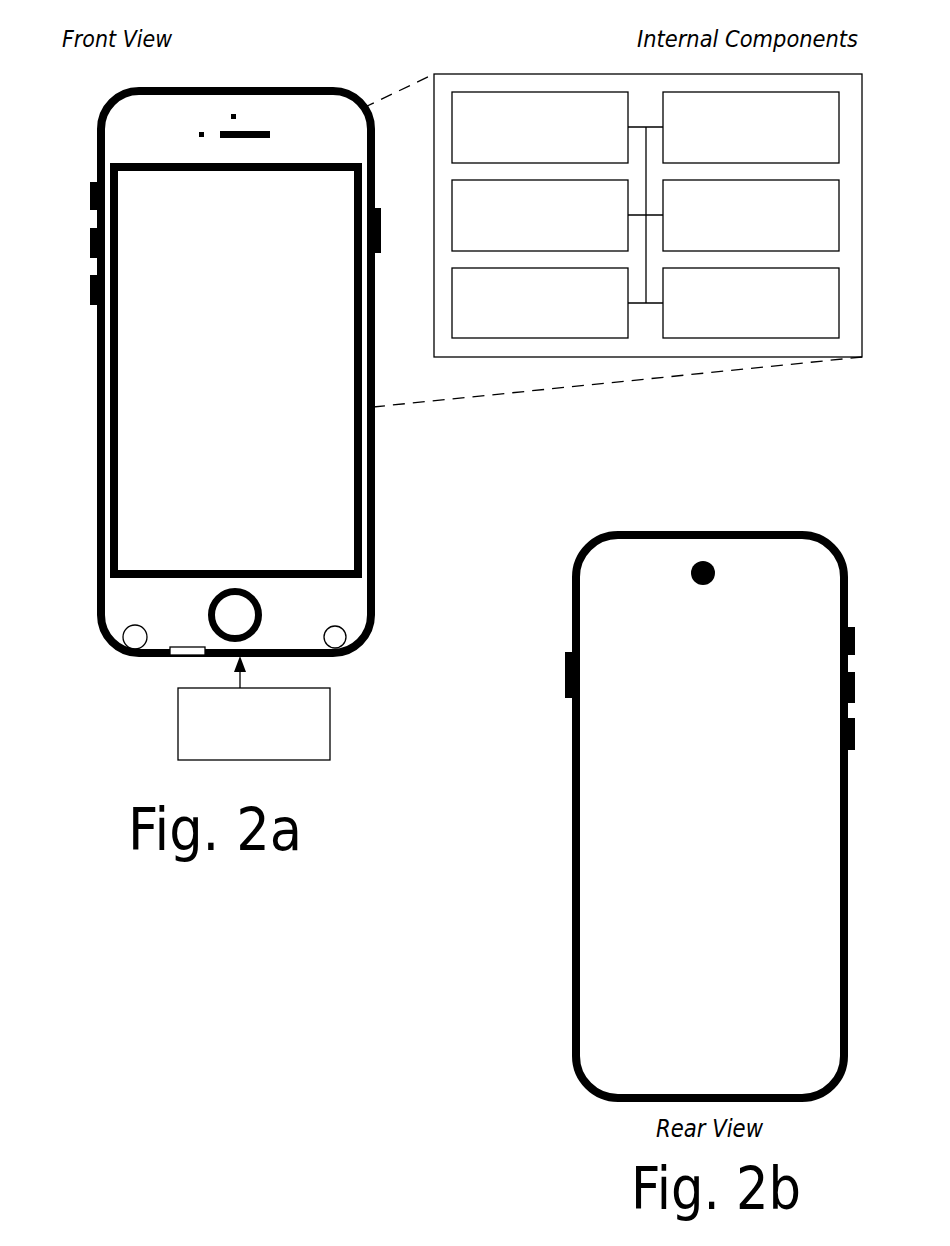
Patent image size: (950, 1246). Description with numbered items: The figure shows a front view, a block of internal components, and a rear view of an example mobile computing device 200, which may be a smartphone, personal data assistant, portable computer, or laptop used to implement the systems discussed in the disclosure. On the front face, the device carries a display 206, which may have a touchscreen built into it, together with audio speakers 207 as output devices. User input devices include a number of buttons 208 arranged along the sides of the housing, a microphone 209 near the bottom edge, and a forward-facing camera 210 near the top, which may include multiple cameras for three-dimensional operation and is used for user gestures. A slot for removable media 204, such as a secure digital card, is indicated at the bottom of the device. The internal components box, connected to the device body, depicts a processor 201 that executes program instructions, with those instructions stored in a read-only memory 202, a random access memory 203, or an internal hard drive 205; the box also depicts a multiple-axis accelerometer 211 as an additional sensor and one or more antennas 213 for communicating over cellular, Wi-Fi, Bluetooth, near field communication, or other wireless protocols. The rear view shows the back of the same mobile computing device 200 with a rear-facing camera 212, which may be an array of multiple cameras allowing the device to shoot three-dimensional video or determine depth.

In FIG. 2A, the mobile computing device 200 is at (330, 600).
In FIG. 2B, the mobile computing device 200 is at (572, 818).
In FIG. 2A, the processor 201 is at (540, 303).
In FIG. 2A, the read-only memory (ROM) 202 is at (751, 303).
In FIG. 2A, the random access memory (RAM) 203 is at (540, 215).
In FIG. 2A, the removable media 204 is at (178, 745).
In FIG. 2A, the internal hard drive 205 is at (751, 215).
In FIG. 2A, the display 206 is at (152, 445).
In FIG. 2A, the audio speakers 207 is at (257, 130).
In FIG. 2A, the buttons 208 is at (85, 247).
In FIG. 2A, the microphone 209 is at (152, 660).
In FIG. 2A, the forward-facing camera 210 is at (236, 113).
In FIG. 2A, the multiple-axis accelerometer 211 is at (540, 127).
In FIG. 2B, the rear-facing camera 212 is at (707, 593).
In FIG. 2A, the antennas 213 is at (751, 127).